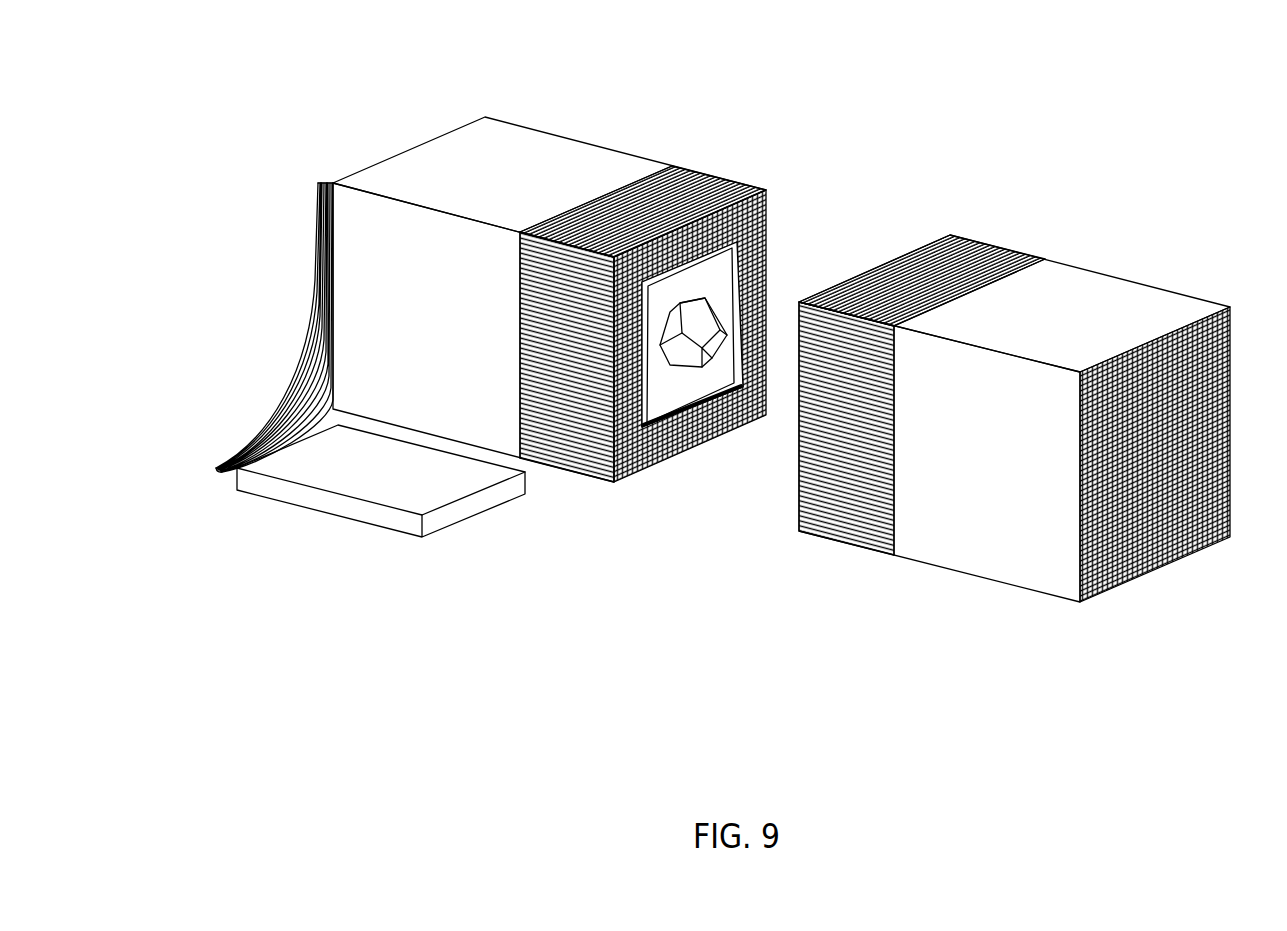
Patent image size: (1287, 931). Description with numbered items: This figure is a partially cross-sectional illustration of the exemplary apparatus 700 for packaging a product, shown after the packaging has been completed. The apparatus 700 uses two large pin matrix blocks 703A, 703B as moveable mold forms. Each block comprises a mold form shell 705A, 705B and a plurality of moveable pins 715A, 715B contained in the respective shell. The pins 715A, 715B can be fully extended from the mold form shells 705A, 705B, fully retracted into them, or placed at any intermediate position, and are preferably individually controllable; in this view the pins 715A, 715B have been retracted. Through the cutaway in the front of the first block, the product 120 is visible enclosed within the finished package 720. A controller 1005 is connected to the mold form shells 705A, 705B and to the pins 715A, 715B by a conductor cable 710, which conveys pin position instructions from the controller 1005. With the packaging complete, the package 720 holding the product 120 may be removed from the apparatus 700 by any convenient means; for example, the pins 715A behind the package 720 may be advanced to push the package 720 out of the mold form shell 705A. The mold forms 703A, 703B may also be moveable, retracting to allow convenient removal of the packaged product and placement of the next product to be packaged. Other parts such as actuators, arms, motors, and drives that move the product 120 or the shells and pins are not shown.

The apparatus 700 is at (678, 614).
The pin matrix block 703A is at (732, 102).
The pin matrix block 703B is at (1064, 182).
The mold form shell 705A is at (430, 140).
The mold form shell 705B is at (1168, 290).
The pins 715A is at (588, 478).
The pins 715B is at (845, 543).
The package 720 is at (678, 392).
The product 120 is at (710, 330).
The conductor cable 710 is at (293, 365).
The controller 1005 is at (305, 507).